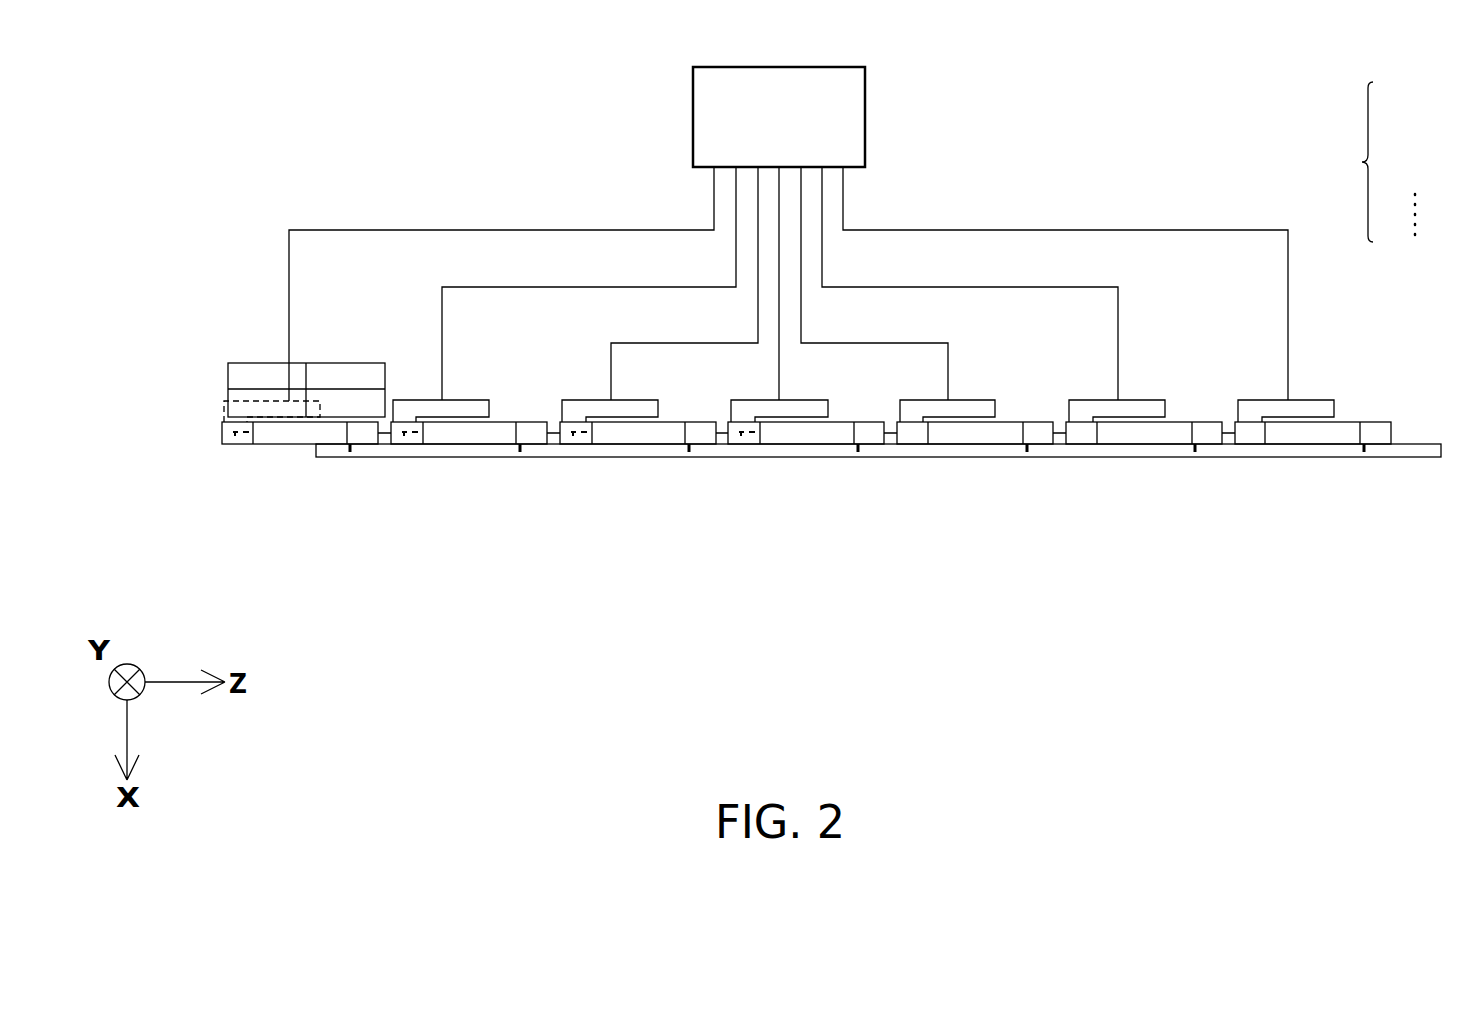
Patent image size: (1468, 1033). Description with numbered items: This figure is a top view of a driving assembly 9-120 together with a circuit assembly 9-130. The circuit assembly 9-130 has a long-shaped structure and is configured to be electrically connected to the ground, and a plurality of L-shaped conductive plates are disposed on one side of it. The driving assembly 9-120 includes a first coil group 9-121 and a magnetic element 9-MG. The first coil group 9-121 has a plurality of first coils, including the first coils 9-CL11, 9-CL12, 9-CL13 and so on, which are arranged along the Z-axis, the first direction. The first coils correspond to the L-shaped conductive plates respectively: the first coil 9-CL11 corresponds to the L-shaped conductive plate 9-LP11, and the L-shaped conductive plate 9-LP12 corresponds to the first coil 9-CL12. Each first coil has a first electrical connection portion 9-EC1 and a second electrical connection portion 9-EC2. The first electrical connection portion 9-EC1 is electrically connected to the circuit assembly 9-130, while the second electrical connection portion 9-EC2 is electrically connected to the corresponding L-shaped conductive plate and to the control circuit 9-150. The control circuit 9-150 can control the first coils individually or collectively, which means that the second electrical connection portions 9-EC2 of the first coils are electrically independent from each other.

The control circuit 9-150 is at (810, 130).
The first coil group 9-121 is at (896, 263).
The first coil 9-CL11 is at (290, 433).
The first coil 9-CL12 is at (490, 432).
The first coil 9-CL13 is at (660, 433).
The driving assembly 9-120 is at (196, 337).
The magnetic element 9-MG is at (229, 356).
The L-shaped conductive plate 9-LP11 is at (227, 402).
The L-shaped conductive plate 9-LP12 is at (460, 410).
The first electrical connection portion 9-EC1 is at (350, 452).
The second electrical connection portion 9-EC2 is at (237, 436).
The circuit assembly 9-130 is at (1409, 470).